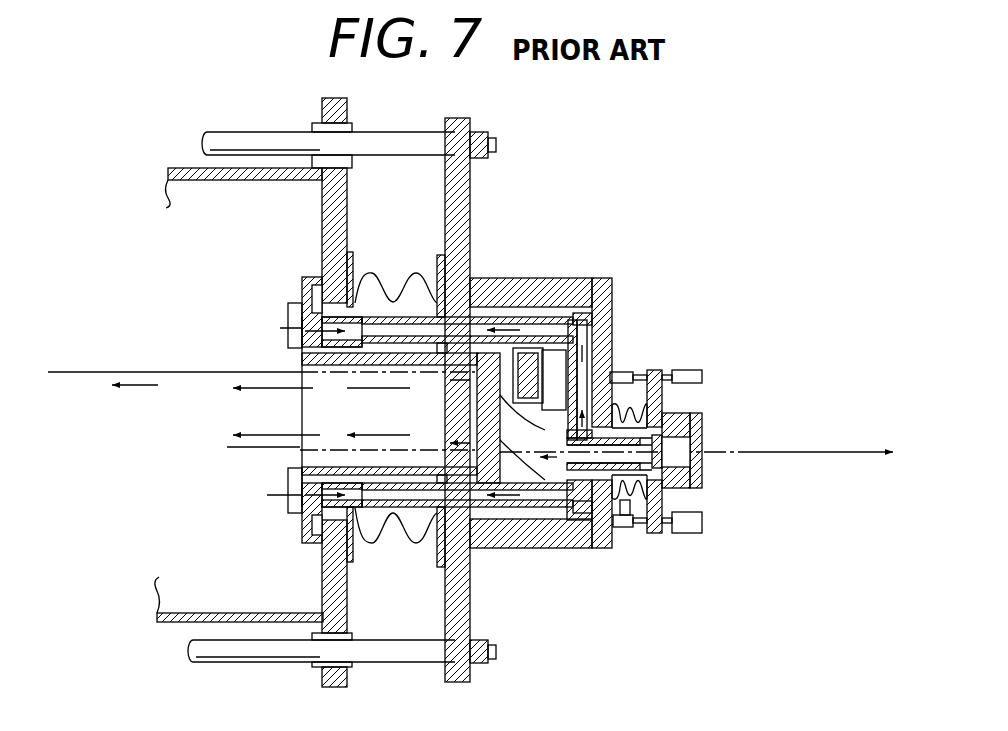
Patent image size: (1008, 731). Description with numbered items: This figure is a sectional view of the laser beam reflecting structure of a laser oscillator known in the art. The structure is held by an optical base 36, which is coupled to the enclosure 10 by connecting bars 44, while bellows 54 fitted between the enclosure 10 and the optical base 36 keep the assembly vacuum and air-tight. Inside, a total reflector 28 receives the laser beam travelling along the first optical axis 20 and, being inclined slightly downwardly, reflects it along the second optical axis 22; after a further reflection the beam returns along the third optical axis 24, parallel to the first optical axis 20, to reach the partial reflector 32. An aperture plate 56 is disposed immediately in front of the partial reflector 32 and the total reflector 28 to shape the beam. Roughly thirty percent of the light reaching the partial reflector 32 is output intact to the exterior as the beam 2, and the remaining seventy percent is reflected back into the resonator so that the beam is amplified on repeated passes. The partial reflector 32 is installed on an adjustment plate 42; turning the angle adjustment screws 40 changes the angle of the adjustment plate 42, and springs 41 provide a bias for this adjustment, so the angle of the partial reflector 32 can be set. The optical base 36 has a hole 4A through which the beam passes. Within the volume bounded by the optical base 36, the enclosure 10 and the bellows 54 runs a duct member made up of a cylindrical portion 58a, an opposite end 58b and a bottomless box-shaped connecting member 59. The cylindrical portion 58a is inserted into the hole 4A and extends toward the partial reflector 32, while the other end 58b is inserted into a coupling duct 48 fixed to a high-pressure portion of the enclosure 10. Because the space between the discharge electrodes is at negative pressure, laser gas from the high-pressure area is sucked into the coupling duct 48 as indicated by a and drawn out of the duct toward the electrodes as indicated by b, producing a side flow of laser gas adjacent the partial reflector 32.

The beam 2 is at (832, 450).
The hole 4A is at (660, 410).
The enclosure 10 is at (323, 578).
The first optical axis 20 is at (50, 370).
The second optical axis 22 is at (158, 386).
The third optical axis 24 is at (228, 449).
The total reflector 28 is at (507, 345).
The partial reflector 32 is at (703, 465).
The optical base 36 is at (471, 189).
The angle adjustment screws 40 is at (680, 370).
The springs 41 is at (630, 515).
The adjustment plate 42 is at (658, 533).
The connecting bars 44 is at (262, 130).
The coupling duct 48 is at (308, 279).
The bellows 54 is at (370, 300).
The aperture plate 56 is at (500, 485).
The cylindrical portion 58a is at (585, 505).
The other end of duct member 58b is at (408, 318).
The connecting member 59 is at (578, 320).
The gas suction flow into duct a is at (282, 328).
The side flow out of duct b is at (408, 411).